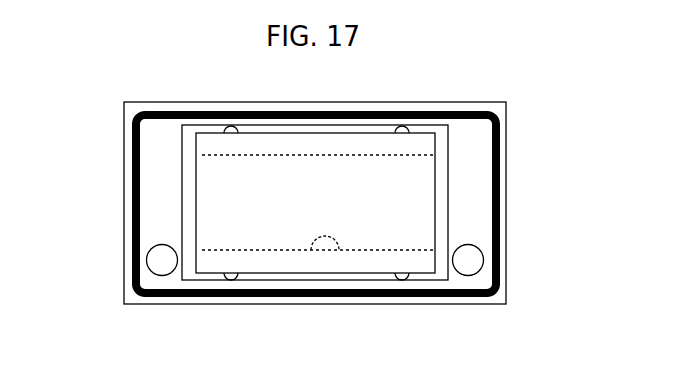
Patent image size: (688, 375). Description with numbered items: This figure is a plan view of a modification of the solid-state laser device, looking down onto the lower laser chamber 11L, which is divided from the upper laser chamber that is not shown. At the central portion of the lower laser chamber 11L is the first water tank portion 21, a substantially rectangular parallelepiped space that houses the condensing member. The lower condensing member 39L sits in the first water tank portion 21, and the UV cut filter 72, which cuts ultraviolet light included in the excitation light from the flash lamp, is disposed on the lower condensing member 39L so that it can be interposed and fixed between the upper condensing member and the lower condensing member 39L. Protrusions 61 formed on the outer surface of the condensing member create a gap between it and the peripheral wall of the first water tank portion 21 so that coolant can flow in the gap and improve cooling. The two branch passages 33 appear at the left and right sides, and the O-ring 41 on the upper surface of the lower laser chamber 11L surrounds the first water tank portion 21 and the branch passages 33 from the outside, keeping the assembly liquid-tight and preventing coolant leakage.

The lower laser chamber 11L is at (272, 304).
The O-ring 41 is at (125, 176).
The first water tank portion 21 is at (437, 164).
The UV cut filter 72 is at (315, 185).
The branch passages 33 is at (162, 254).
The protrusions 61 is at (236, 124).
The lower condensing member 39L is at (342, 254).